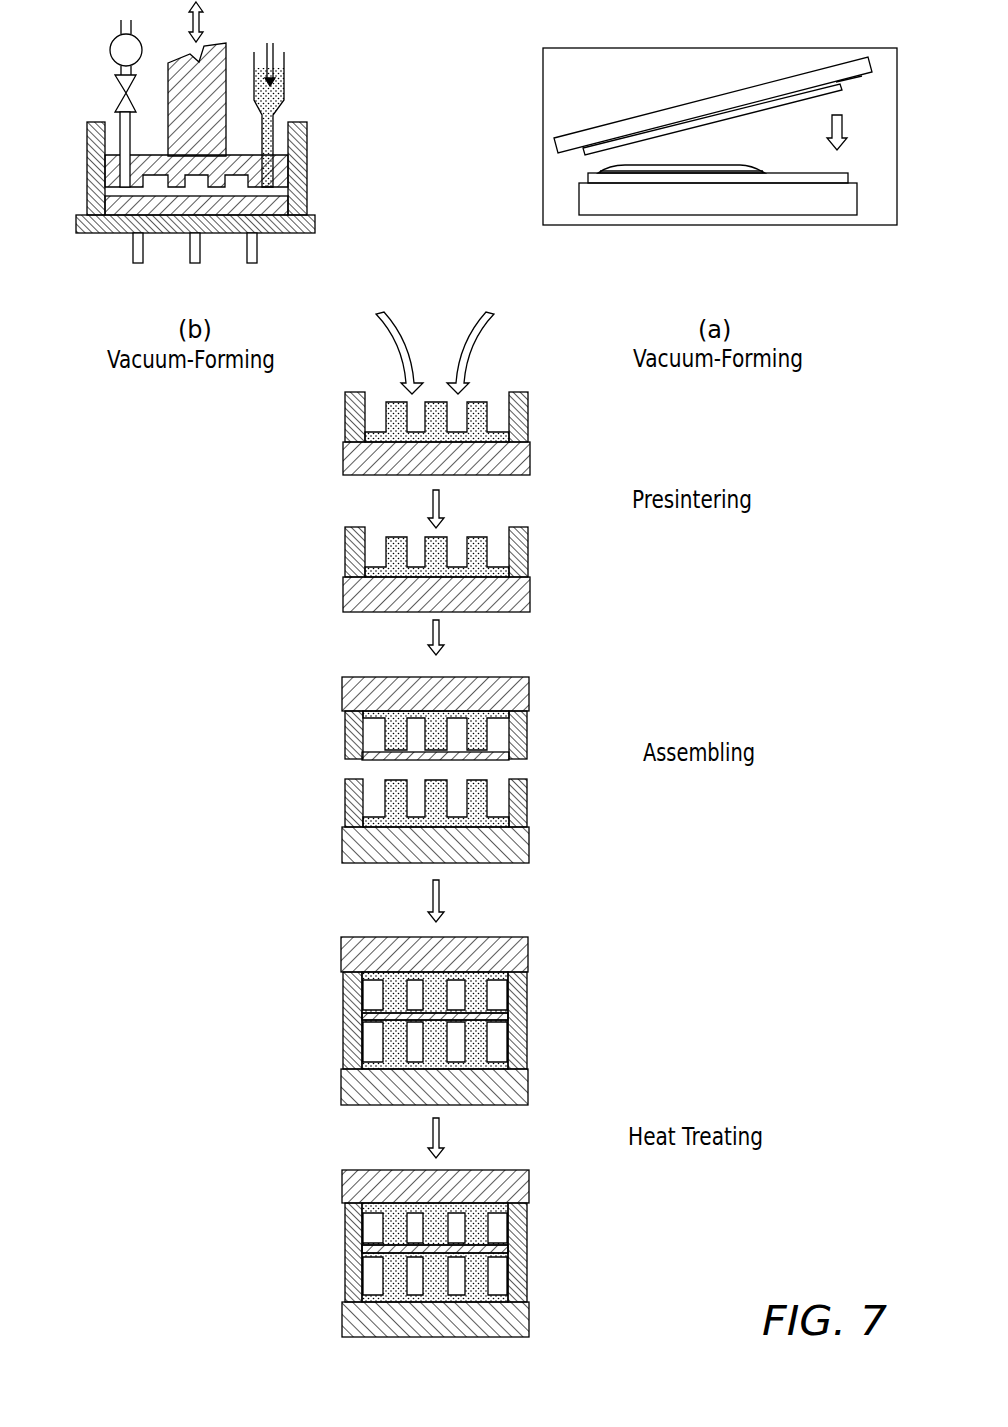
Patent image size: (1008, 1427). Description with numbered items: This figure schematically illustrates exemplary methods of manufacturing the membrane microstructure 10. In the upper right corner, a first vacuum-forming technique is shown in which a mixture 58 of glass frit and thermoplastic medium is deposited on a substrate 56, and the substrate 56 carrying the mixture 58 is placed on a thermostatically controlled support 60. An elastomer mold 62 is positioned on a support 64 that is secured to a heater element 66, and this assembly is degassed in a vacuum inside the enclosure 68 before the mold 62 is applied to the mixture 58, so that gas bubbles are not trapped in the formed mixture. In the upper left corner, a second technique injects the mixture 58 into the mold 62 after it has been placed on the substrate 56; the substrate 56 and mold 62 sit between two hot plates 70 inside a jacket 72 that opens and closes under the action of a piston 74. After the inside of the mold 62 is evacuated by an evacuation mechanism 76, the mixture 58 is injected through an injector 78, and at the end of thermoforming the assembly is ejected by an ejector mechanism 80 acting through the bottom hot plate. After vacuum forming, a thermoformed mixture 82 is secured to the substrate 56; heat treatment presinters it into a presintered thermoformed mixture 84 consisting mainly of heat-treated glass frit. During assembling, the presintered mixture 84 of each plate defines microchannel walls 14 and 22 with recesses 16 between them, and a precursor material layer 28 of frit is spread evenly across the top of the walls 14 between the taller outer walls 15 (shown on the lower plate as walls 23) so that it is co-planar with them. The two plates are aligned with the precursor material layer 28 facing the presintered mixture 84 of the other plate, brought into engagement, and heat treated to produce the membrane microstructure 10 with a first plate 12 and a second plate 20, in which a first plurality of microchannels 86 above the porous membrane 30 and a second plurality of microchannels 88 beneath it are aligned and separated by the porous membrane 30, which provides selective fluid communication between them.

The membrane microstructure 10 is at (268, 1250).
The first plate 12 is at (520, 1193).
The walls 14 is at (437, 732).
The outer walls 15 is at (527, 745).
The recess 16 is at (415, 727).
The second plate 20 is at (520, 1322).
The second plurality of walls 22 is at (425, 805).
The side wall frame 23 is at (345, 822).
The precursor material layer 28 is at (480, 758).
The porous membrane 30 is at (457, 1240).
The substrate 56 is at (808, 176).
The mixture 58 is at (158, 182).
The thermostatically controlled support 60 is at (843, 200).
The mold 62 is at (193, 166).
The support 64 is at (840, 84).
The heater element 66 is at (648, 122).
The enclosure 68 is at (612, 48).
The hot plates 70 is at (108, 173).
The jacket 72 is at (87, 132).
The piston 74 is at (221, 50).
The evacuation mechanism 76 is at (110, 50).
The injector 78 is at (285, 80).
The ejector mechanism 80 is at (192, 252).
The mixture 82 is at (487, 412).
The presintered thermoformed mixture 84 is at (487, 547).
The first plurality of microchannels 86 is at (500, 1234).
The second plurality of microchannels 88 is at (500, 1279).